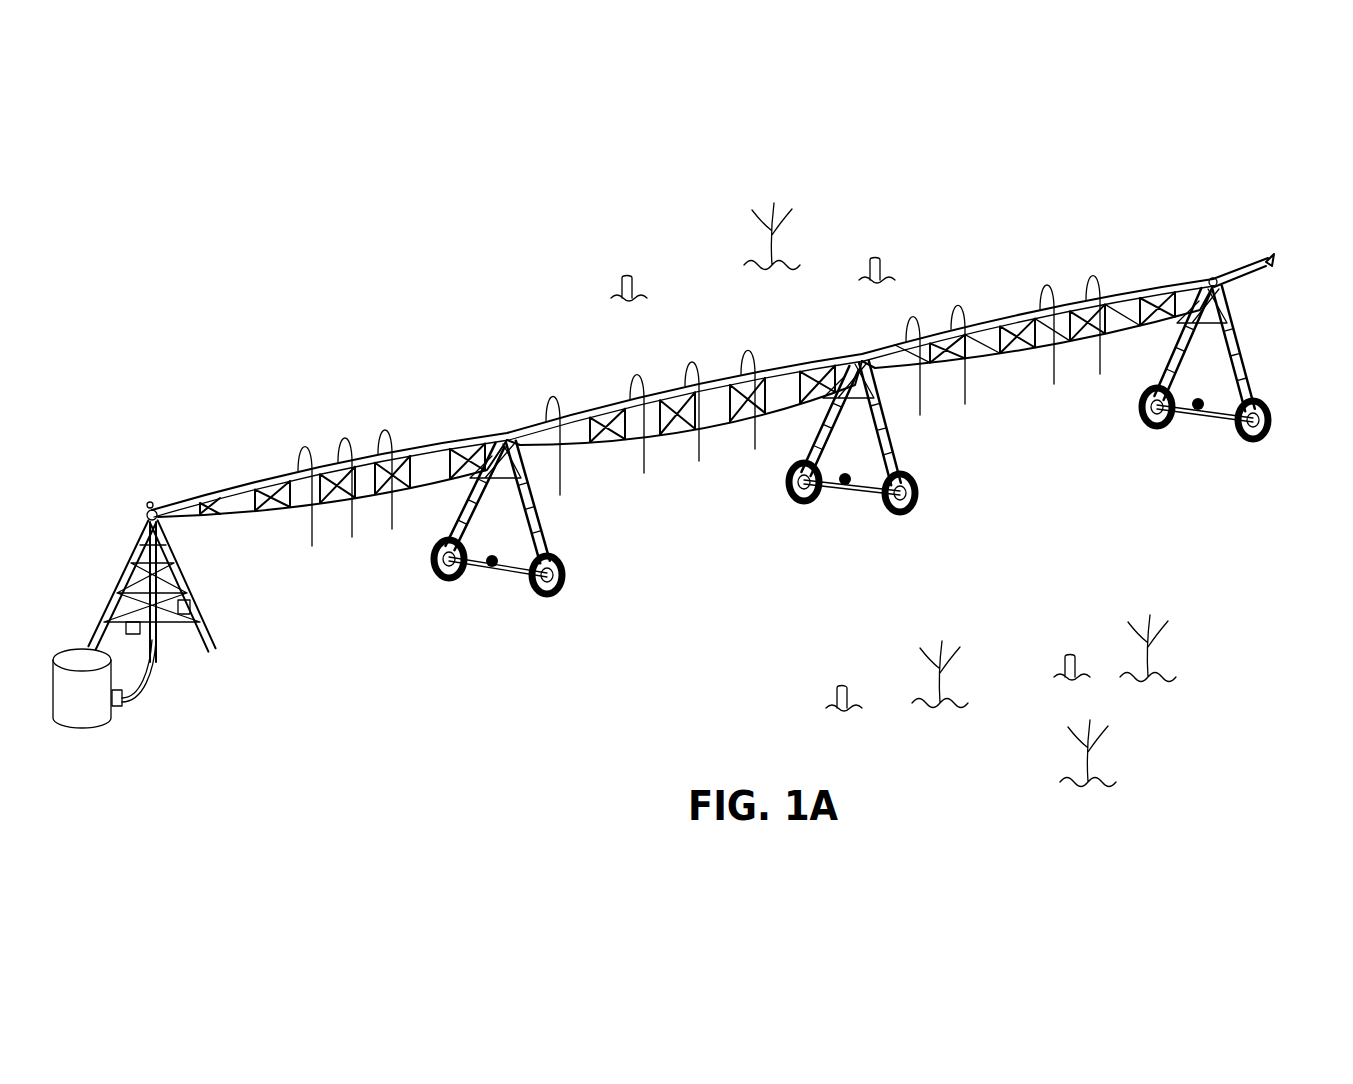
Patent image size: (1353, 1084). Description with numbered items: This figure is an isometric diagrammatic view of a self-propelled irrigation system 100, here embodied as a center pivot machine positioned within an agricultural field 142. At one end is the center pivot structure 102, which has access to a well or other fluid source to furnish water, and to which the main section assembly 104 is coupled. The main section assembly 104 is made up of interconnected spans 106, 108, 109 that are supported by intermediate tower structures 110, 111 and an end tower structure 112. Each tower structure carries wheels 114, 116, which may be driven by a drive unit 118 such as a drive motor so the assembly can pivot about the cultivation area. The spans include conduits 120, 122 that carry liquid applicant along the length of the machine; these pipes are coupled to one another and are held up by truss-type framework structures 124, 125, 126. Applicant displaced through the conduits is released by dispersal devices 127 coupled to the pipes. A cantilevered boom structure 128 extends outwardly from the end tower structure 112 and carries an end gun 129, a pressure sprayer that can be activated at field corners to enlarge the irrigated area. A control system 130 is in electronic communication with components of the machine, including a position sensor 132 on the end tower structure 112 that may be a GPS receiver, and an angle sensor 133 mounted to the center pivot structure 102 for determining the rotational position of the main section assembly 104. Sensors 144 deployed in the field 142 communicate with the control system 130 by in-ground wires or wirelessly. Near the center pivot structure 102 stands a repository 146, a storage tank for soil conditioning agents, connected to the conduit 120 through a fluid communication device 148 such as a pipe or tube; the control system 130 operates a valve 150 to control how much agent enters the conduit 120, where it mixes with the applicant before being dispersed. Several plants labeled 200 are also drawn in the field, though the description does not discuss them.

The irrigation system 100 is at (514, 231).
The center pivot structure 102 is at (122, 592).
The main section assembly 104 is at (271, 380).
The span 106 is at (403, 433).
The span 108 is at (727, 369).
The span 109 is at (1055, 291).
The tower structure 110 is at (462, 522).
The tower structure 111 is at (701, 450).
The end tower structure 112 is at (1158, 372).
The wheel 114 is at (560, 598).
The wheel 116 is at (452, 586).
The drive unit 118 is at (497, 558).
The conduit 120 is at (266, 490).
The conduit 122 is at (1004, 322).
The truss-type framework structure 124 is at (310, 523).
The truss-type framework structure 125 is at (682, 436).
The truss-type framework structure 126 is at (1028, 355).
The dispersal device 127 is at (398, 532).
The cantilevered boom structure 128 is at (1246, 284).
The end gun 129 is at (1272, 262).
The control system 130 is at (186, 618).
The position sensor 132 is at (1212, 278).
The angle sensor 133 is at (150, 503).
The agricultural field 142 is at (1005, 508).
The sensor 144 is at (632, 280).
The repository 146 is at (75, 730).
The fluid communication device 148 is at (150, 698).
The valve 150 is at (120, 710).
The crop plant 200 is at (776, 248).